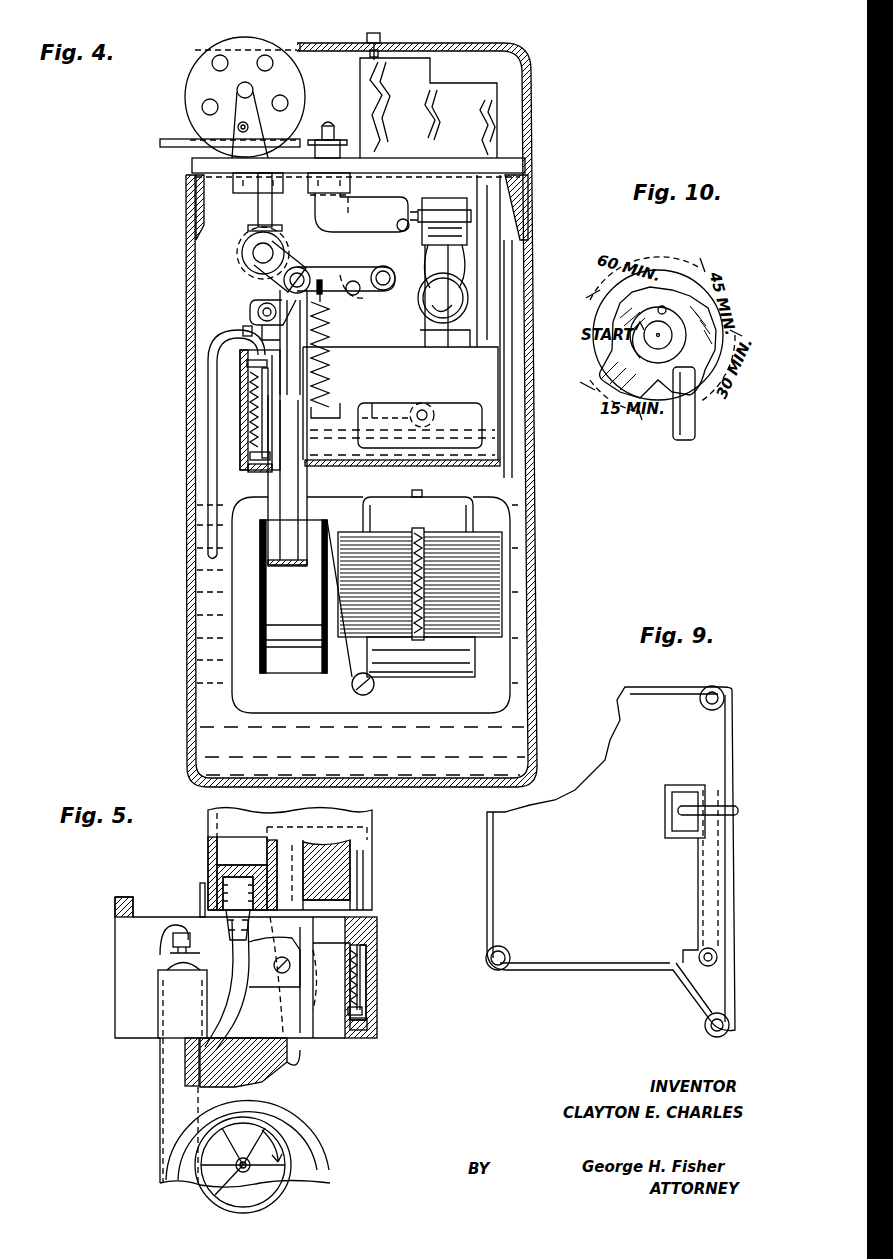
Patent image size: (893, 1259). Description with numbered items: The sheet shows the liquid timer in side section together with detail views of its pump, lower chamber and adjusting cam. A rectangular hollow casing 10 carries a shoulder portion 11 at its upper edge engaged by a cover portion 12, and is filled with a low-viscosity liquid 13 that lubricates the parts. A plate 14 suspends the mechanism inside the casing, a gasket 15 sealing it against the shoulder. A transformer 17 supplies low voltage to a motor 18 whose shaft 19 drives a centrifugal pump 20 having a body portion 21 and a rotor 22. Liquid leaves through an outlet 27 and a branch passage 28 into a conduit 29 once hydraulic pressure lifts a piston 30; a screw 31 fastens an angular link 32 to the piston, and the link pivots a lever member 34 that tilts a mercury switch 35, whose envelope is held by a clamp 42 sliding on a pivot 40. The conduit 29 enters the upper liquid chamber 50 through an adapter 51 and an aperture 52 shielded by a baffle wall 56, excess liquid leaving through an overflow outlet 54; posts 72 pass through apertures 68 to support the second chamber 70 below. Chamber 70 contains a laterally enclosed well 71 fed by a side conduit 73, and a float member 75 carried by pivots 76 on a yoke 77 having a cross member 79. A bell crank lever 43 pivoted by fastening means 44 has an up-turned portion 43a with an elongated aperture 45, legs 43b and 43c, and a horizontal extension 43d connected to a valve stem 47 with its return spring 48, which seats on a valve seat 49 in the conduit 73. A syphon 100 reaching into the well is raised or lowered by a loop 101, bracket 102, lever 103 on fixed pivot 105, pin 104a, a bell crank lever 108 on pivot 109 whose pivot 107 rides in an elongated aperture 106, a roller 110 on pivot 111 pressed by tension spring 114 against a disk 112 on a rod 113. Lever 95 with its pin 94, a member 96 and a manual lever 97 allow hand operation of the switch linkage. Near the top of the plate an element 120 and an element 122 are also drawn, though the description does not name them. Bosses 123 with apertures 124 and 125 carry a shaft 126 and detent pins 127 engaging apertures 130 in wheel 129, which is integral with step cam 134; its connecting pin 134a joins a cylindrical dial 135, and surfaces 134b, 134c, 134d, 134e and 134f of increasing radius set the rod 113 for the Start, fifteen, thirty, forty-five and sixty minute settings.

In FIG. 4, the hollow casing 10 is at (516, 430).
In FIG. 4, the shoulder portion 11 is at (519, 197).
In FIG. 4, the cover portion 12 is at (445, 45).
In FIG. 4, the liquid 13 is at (530, 468).
In FIG. 4, the plate 14 is at (448, 165).
In FIG. 4, the gasket 15 is at (398, 172).
In FIG. 4, the transformer 17 is at (490, 596).
In FIG. 4, the motor 18 is at (470, 658).
In FIG. 5, the shaft 19 is at (238, 1165).
In FIG. 5, the pump 20 is at (328, 1097).
In FIG. 5, the body portion 21 is at (272, 1078).
In FIG. 5, the rotor 22 is at (260, 1130).
In FIG. 5, the outlet 27 is at (176, 1102).
In FIG. 5, the branch passage 28 is at (270, 1048).
In FIG. 5, the conduit 29 is at (238, 1015).
In FIG. 5, the piston 30 is at (185, 1052).
In FIG. 5, the screw 31 is at (168, 934).
In FIG. 4, the link 32 is at (430, 350).
In FIG. 5, the link 32 is at (200, 895).
In FIG. 4, the lever member 34 is at (428, 232).
In FIG. 4, the mercury switch 35 is at (448, 350).
In FIG. 4, the pivot 40 is at (430, 215).
In FIG. 4, the clamp 42 is at (445, 275).
In FIG. 5, the bell crank lever 43 is at (272, 988).
In FIG. 5, the up-turned portion 43a is at (172, 948).
In FIG. 5, the leg 43b is at (295, 1000).
In FIG. 5, the leg 43c is at (326, 988).
In FIG. 4, the horizontal extension 43d is at (240, 362).
In FIG. 5, the horizontal extension 43d is at (348, 942).
In FIG. 5, the fastening means 44 is at (276, 969).
In FIG. 5, the elongated aperture 45 is at (165, 975).
In FIG. 4, the valve stem 47 is at (262, 400).
In FIG. 5, the valve stem 47 is at (361, 958).
In FIG. 4, the return spring 48 is at (252, 410).
In FIG. 5, the return spring 48 is at (360, 968).
In FIG. 4, the valve seat 49 is at (250, 456).
In FIG. 9, the valve seat 49 is at (698, 957).
In FIG. 5, the valve seat 49 is at (362, 1008).
In FIG. 4, the upper liquid chamber 50 is at (402, 203).
In FIG. 5, the upper liquid chamber 50 is at (373, 815).
In FIG. 5, the adapter 51 is at (226, 924).
In FIG. 5, the aperture 52 is at (222, 880).
In FIG. 5, the overflow outlet 54 is at (310, 938).
In FIG. 5, the horizontal wall structure 56 is at (236, 876).
In FIG. 5, the apertures 68 is at (362, 857).
In FIG. 4, the second chamber 70 is at (405, 350).
In FIG. 9, the second chamber 70 is at (486, 886).
In FIG. 5, the second chamber 70 is at (246, 967).
In FIG. 4, the well 71 is at (307, 486).
In FIG. 9, the well 71 is at (665, 836).
In FIG. 5, the well 71 is at (333, 964).
In FIG. 4, the posts 72 is at (489, 262).
In FIG. 4, the conduit 73 is at (250, 464).
In FIG. 9, the conduit 73 is at (716, 893).
In FIG. 5, the conduit 73 is at (368, 1028).
In FIG. 4, the float member 75 is at (452, 408).
In FIG. 4, the pivot 76 is at (422, 410).
In FIG. 4, the yoke 77 is at (372, 403).
In FIG. 4, the cross member 79 is at (344, 403).
In FIG. 4, the pin 94 is at (398, 222).
In FIG. 4, the lever 95 is at (323, 222).
In FIG. 4, the member 96 is at (332, 140).
In FIG. 4, the manually operable lever 97 is at (180, 147).
In FIG. 4, the syphon 100 is at (208, 393).
In FIG. 9, the syphon 100 is at (684, 805).
In FIG. 4, the loop 101 is at (243, 330).
In FIG. 4, the bracket 102 is at (257, 314).
In FIG. 4, the lever 103 is at (258, 300).
In FIG. 4, the pin 104a is at (256, 311).
In FIG. 4, the fixed pivot 105 is at (383, 266).
In FIG. 4, the elongated aperture 106 is at (322, 300).
In FIG. 4, the pivot 107 is at (358, 292).
In FIG. 4, the bell crank lever 108 is at (345, 278).
In FIG. 4, the pivot 109 is at (305, 278).
In FIG. 4, the roller 110 is at (242, 255).
In FIG. 4, the pivot 111 is at (262, 244).
In FIG. 4, the disk 112 is at (248, 228).
In FIG. 4, the rod 113 is at (258, 210).
In FIG. 10, the rod 113 is at (696, 432).
In FIG. 4, the tension spring 114 is at (336, 340).
In FIG. 4, the element 120 is at (478, 92).
In FIG. 4, the screw 122 is at (368, 36).
In FIG. 4, the bosses 123 is at (225, 112).
In FIG. 4, the apertures 124 is at (258, 96).
In FIG. 4, the apertures 125 is at (258, 137).
In FIG. 4, the shaft 126 is at (240, 90).
In FIG. 4, the detent pins 127 is at (243, 122).
In FIG. 4, the wheel 129 is at (245, 42).
In FIG. 4, the apertures 130 is at (268, 60).
In FIG. 10, the step cam 134 is at (612, 352).
In FIG. 10, the connecting pin 134a is at (680, 280).
In FIG. 10, the cam surface 134b is at (672, 440).
In FIG. 10, the cam surface 134c is at (700, 320).
In FIG. 10, the cam surface 134d is at (655, 290).
In FIG. 10, the cam surface 134e is at (612, 318).
In FIG. 10, the cam surface 134f is at (622, 395).
In FIG. 10, the cylindrical dial 135 is at (614, 286).